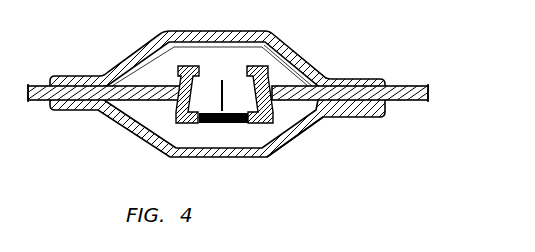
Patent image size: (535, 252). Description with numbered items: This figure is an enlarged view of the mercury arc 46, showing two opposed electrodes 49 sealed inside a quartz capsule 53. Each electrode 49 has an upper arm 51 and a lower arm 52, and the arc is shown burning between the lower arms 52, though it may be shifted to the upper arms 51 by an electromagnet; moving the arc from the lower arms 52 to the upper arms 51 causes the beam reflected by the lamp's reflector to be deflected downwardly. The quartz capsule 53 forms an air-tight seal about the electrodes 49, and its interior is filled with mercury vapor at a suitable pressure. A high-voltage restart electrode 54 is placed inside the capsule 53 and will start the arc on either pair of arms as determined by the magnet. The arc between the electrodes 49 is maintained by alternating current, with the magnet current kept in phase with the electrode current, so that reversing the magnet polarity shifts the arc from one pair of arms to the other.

The mercury arc 46 is at (228, 93).
The electrode 49 is at (148, 86).
The upper arm 51 is at (258, 66).
The lower arm 52 is at (194, 123).
The quartz capsule 53 is at (306, 134).
The high-voltage restart electrode 54 is at (222, 80).